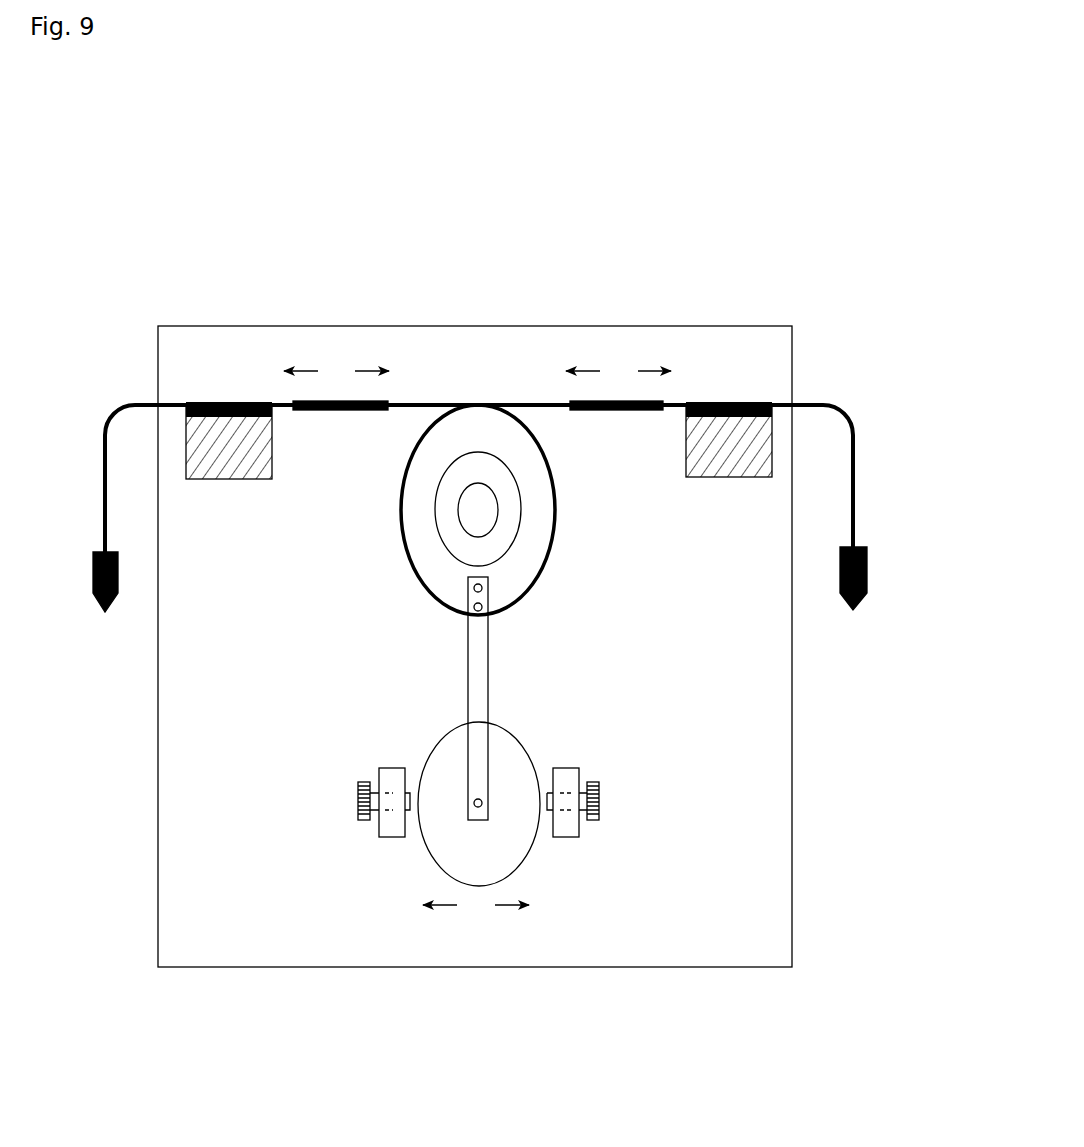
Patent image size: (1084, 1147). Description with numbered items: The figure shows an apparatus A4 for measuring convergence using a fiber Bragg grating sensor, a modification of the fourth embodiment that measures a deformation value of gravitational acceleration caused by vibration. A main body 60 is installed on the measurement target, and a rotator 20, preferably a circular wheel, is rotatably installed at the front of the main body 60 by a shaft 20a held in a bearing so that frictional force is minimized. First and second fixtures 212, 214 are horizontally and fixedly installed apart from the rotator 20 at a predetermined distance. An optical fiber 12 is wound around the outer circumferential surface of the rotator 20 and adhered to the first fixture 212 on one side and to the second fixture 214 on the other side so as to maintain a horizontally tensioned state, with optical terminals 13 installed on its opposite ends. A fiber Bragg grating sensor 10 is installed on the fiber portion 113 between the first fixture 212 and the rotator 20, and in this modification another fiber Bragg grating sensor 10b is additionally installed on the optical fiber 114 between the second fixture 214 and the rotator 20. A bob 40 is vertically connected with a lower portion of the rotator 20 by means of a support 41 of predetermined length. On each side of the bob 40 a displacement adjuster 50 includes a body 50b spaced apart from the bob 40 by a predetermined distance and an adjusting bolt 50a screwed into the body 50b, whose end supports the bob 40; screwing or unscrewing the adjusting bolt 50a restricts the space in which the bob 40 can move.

The apparatus for measuring convergence A4 is at (718, 218).
The tape 12 is at (212, 402).
The optical terminals 13 is at (92, 573).
The first tape portion 113 is at (427, 402).
The optical fiber 114 is at (527, 402).
The fiber Bragg grating sensor 10 is at (337, 410).
The fiber Bragg grating sensor 10b is at (620, 410).
The first fixture 212 is at (235, 460).
The second fixture 214 is at (728, 455).
The rotator 20 is at (428, 555).
The shaft 20a is at (485, 513).
The bob 40 is at (435, 767).
The support 41 is at (488, 683).
The displacement adjuster 50 is at (524, 850).
The adjusting bolt 50a is at (600, 800).
The body 50b is at (570, 838).
The main body 60 is at (758, 800).